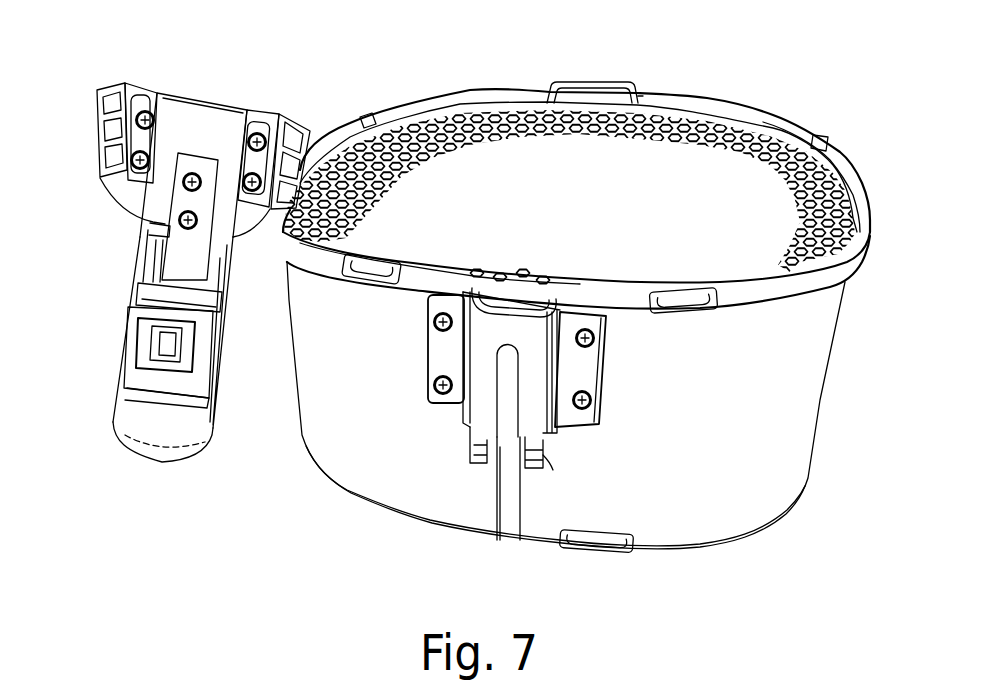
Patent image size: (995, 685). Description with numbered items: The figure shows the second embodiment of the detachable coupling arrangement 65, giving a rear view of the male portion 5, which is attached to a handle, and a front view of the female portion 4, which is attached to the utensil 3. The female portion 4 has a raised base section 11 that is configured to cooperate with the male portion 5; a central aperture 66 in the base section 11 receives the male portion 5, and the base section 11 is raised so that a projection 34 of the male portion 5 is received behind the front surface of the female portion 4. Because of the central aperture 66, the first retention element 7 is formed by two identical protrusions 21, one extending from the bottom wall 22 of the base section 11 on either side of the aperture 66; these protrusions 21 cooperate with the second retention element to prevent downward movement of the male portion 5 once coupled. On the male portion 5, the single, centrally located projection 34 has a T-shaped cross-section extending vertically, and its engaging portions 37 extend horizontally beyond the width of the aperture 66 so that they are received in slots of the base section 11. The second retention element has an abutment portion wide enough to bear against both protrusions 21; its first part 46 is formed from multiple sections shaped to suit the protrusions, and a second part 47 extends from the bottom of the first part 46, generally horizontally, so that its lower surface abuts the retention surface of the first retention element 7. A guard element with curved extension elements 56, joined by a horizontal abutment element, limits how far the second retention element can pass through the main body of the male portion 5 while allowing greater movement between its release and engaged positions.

The utensil 3 is at (783, 481).
The female portion 4 is at (533, 325).
The male portion 5 is at (175, 105).
The first retention element 7 is at (545, 457).
The base section 11 is at (476, 290).
The protrusion 21 is at (478, 465).
The bottom wall 22 is at (543, 437).
The projection 34 is at (132, 162).
The engaging portion 37 is at (177, 190).
The first part 46 is at (138, 292).
The second part 47 is at (145, 303).
The extension element 56 is at (222, 258).
The detachable coupling arrangement 65 is at (524, 240).
The aperture 66 is at (500, 440).